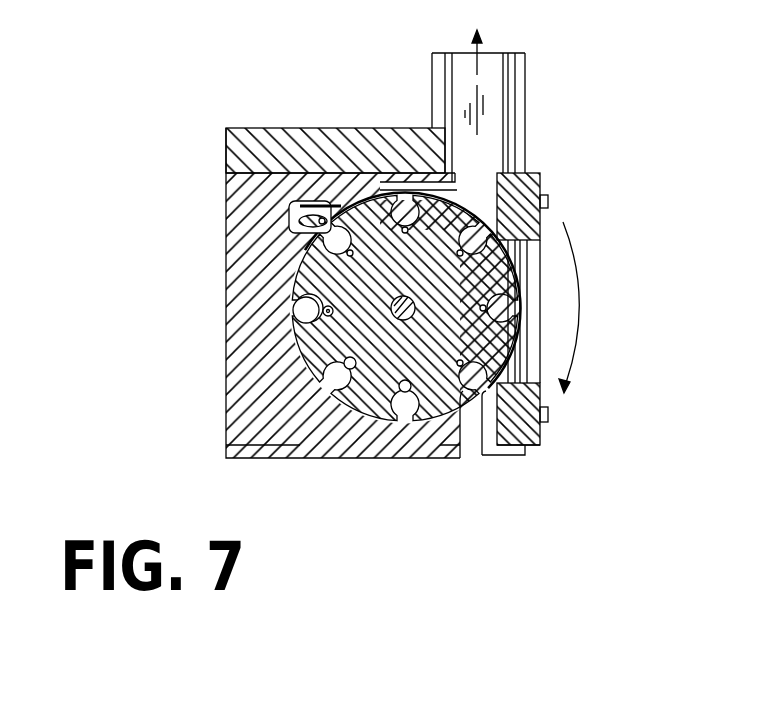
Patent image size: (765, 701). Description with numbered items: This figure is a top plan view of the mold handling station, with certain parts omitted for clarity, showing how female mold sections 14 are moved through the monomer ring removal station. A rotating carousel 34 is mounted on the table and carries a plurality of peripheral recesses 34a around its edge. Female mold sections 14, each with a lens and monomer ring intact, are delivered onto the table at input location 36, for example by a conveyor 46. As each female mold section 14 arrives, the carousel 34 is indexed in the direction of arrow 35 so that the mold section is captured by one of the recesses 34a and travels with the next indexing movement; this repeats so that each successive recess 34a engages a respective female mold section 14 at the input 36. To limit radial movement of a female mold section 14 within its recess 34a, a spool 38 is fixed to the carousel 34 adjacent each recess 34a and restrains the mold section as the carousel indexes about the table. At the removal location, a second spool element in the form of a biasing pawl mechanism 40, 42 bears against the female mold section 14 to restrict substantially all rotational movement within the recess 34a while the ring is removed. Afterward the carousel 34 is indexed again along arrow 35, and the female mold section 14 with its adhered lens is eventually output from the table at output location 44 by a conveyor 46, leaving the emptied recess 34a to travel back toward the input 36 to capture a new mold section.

The female mold section 14 is at (294, 306).
The rotating carousel 34 is at (518, 342).
The peripheral recesses 34a is at (500, 312).
The arrow 35 is at (581, 262).
The input location 36 is at (477, 470).
The spool 38 is at (298, 352).
The biasing pawl mechanism 40 is at (290, 230).
The biasing pawl mechanism 42 is at (311, 212).
The output location 44 is at (476, 190).
The conveyor 46 is at (494, 100).